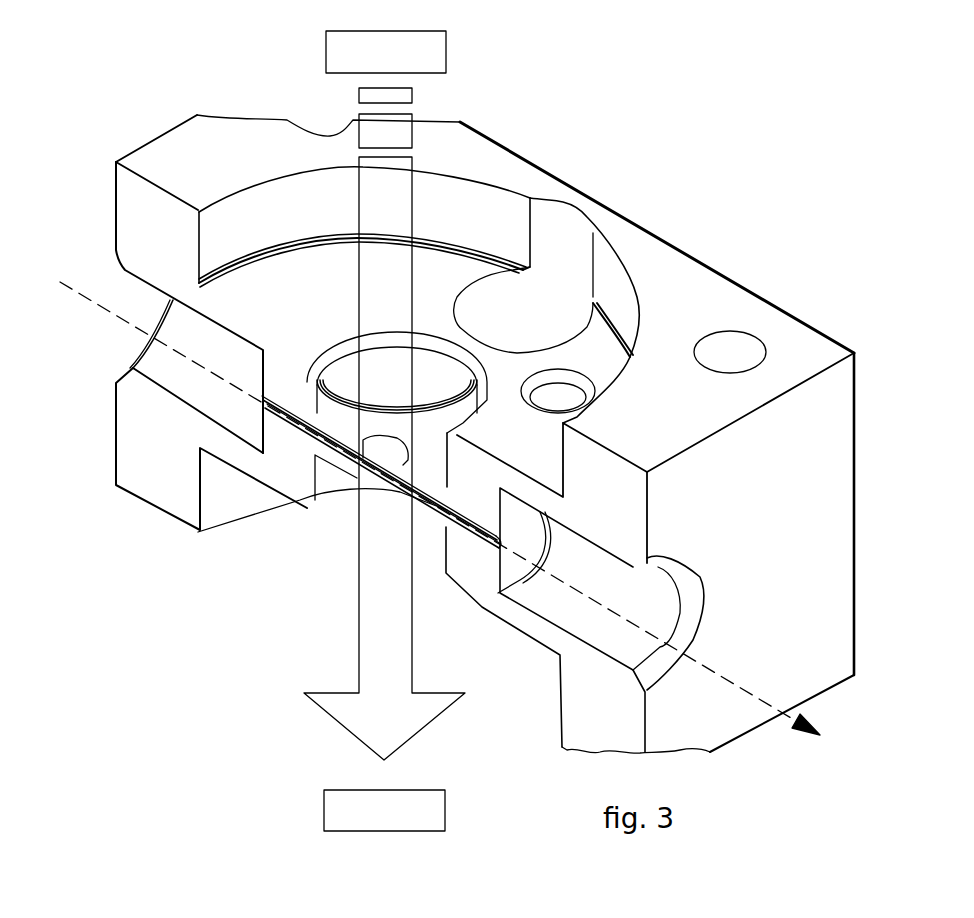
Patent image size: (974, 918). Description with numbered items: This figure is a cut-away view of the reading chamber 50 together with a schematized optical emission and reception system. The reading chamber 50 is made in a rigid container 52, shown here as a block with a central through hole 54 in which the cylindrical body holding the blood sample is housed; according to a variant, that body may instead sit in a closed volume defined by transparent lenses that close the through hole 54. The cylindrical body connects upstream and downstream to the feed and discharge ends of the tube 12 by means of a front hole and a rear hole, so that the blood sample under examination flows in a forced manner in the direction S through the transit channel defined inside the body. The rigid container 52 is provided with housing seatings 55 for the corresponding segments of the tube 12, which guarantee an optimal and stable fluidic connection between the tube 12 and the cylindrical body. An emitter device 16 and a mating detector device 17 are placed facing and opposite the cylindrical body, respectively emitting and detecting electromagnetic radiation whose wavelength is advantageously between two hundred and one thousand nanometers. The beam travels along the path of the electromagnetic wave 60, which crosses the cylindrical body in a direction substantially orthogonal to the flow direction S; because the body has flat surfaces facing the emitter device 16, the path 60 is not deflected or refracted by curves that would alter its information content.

The tube 12 is at (265, 395).
The emitter device 16 is at (433, 53).
The detector device 17 is at (340, 810).
The reading chamber 50 is at (444, 385).
The rigid container 52 is at (831, 546).
The central through hole 54 is at (357, 440).
The housing seatings 55 is at (190, 390).
The path of the electromagnetic wave 60 is at (413, 192).
The direction of flow S is at (705, 663).